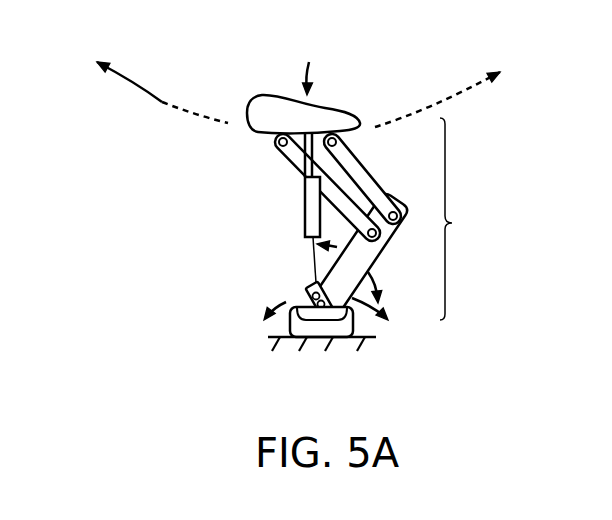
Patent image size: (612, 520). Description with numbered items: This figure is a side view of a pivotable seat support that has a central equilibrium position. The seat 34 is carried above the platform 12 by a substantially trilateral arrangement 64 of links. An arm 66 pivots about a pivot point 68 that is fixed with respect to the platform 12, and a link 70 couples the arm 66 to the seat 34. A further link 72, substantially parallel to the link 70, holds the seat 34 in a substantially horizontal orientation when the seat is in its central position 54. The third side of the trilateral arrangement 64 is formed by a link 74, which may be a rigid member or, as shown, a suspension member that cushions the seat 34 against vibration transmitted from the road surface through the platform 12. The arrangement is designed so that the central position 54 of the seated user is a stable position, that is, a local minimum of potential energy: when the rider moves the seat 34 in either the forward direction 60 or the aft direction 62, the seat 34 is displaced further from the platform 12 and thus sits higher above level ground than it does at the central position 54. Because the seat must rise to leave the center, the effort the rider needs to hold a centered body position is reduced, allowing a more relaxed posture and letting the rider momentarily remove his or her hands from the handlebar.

The platform 12 is at (371, 341).
The seat 34 is at (256, 111).
The central position 54 is at (311, 63).
The forward direction 60 is at (432, 107).
The aft direction 62 is at (158, 98).
The trilateral arrangement 64 is at (452, 223).
The arm 66 is at (387, 250).
The pivot point 68 is at (320, 327).
The link 70 is at (368, 165).
The link 72 is at (295, 157).
The link 74 is at (303, 217).